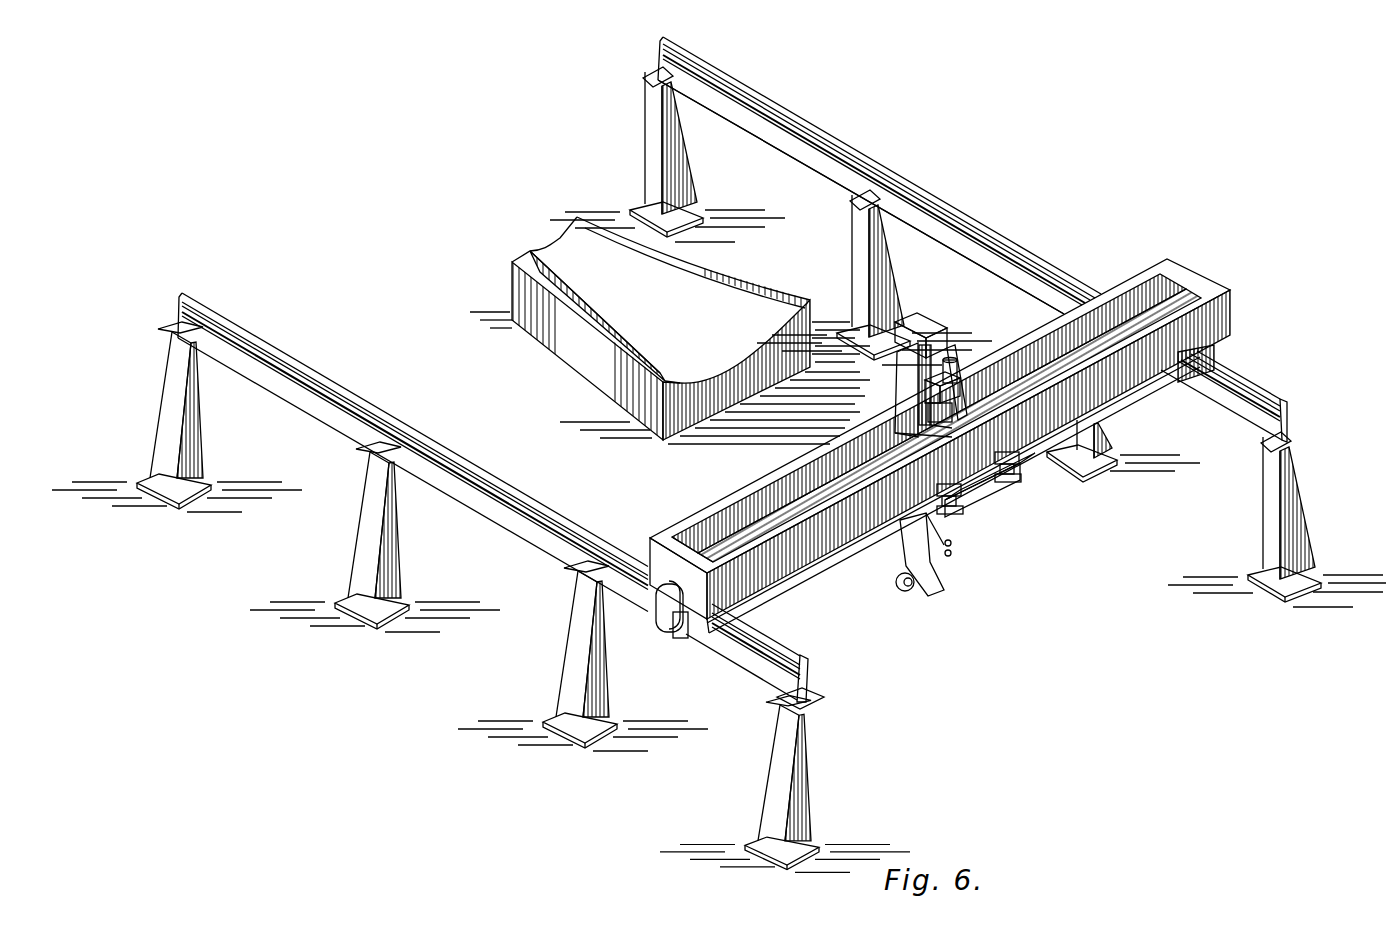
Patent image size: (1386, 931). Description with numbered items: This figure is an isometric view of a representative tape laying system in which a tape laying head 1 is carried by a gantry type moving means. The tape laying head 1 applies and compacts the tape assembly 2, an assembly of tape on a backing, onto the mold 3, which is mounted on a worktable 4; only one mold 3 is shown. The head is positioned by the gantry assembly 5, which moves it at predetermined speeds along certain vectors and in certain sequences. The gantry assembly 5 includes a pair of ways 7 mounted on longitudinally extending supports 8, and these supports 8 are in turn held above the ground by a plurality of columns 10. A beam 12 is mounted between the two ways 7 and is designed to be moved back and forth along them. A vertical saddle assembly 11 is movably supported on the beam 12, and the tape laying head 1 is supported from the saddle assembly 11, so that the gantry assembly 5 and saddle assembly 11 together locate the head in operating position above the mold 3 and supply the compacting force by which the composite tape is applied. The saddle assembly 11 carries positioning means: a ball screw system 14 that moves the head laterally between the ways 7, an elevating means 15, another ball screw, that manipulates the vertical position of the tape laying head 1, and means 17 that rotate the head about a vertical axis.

The tape laying head 1 is at (968, 570).
The tape assembly 2 is at (553, 240).
The mold 3 is at (674, 316).
The worktable 4 is at (596, 365).
The gantry assembly 5 is at (697, 498).
The ways 7 is at (670, 40).
The longitudinally extending supports 8 is at (783, 152).
The columns 10 is at (669, 160).
The vertical saddle assembly 11 is at (886, 396).
The beam 12 is at (757, 480).
The ball screw system 14 is at (800, 578).
The elevating means 15 is at (962, 345).
The means to rotate the head 17 is at (997, 506).